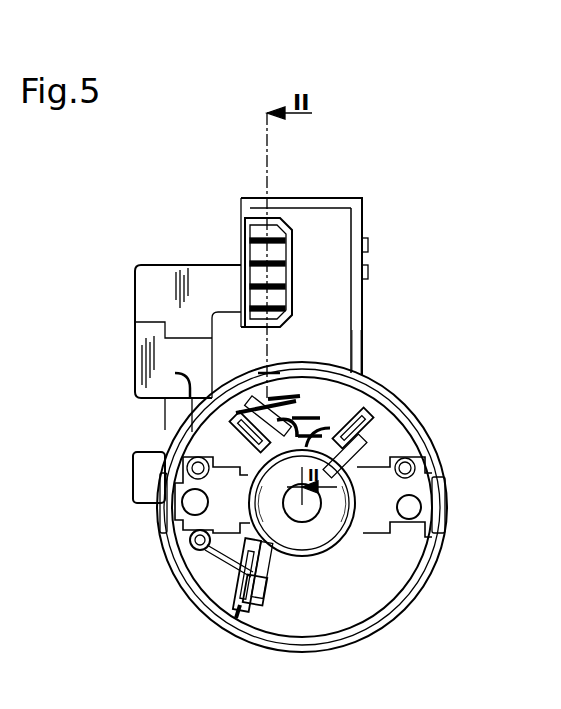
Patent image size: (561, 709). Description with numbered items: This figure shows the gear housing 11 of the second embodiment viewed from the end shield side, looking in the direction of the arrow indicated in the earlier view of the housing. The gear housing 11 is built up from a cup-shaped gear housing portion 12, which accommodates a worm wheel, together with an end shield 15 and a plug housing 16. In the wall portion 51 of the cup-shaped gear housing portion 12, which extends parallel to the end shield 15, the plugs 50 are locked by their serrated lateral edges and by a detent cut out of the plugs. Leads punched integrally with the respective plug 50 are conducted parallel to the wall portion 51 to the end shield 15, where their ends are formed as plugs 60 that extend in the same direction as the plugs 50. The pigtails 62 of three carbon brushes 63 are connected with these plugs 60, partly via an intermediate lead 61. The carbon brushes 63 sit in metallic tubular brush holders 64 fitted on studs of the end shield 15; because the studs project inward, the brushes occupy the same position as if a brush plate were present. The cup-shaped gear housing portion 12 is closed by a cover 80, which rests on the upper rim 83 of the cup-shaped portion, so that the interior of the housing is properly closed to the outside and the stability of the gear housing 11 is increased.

The gear housing 11 is at (363, 310).
The cup-shaped gear housing portion 12 is at (335, 205).
The end shield 15 is at (397, 580).
The plug housing 16 is at (267, 247).
The plugs 50 is at (254, 305).
The wall portion 51 is at (340, 240).
The plugs 60 is at (325, 428).
The intermediate lead 61 is at (195, 445).
The pigtails 62 is at (340, 427).
The carbon brushes 63 is at (297, 560).
The tubular brush holders 64 is at (232, 417).
The cover 80 is at (360, 343).
The upper rim 83 is at (365, 198).